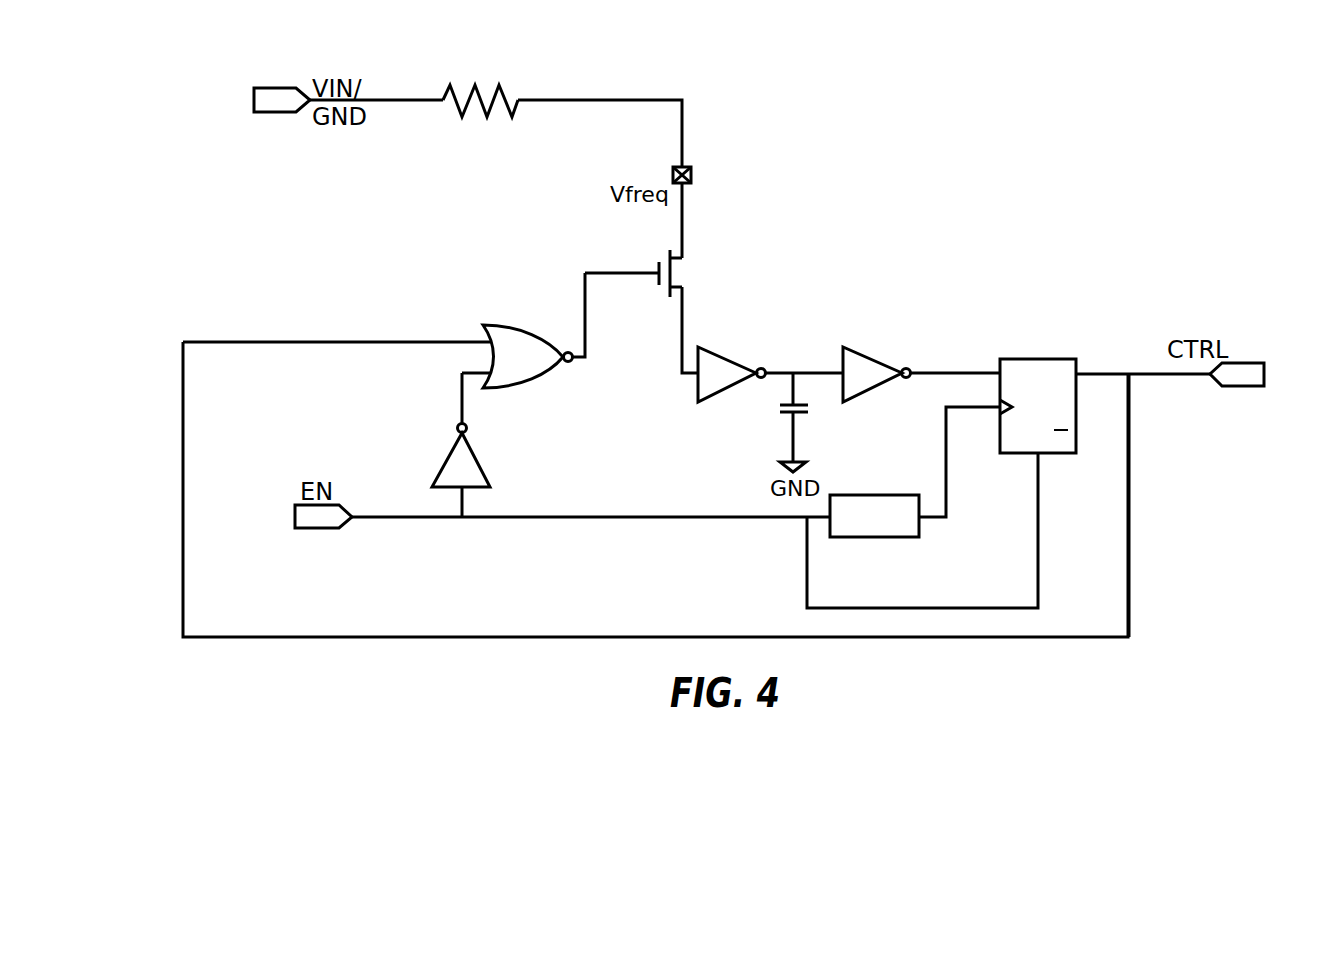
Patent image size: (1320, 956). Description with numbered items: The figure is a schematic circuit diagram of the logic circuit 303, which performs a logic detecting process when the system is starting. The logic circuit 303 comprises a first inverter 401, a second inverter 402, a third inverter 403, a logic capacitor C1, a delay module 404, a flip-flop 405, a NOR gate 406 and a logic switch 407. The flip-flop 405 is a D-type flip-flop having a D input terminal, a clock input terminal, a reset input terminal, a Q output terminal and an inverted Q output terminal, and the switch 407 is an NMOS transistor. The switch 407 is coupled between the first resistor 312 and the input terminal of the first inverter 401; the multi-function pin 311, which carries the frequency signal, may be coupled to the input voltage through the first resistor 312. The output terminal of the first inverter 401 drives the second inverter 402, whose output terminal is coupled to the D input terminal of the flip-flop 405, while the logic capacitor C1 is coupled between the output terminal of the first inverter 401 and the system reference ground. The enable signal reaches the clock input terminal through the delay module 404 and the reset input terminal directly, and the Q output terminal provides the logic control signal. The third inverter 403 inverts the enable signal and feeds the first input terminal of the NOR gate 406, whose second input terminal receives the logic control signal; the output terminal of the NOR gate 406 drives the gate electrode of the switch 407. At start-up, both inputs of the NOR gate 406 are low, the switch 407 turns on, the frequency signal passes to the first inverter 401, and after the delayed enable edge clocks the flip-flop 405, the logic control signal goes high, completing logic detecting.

The logic circuit 303 is at (858, 88).
The multi-function pin 311 is at (692, 174).
The first resistor 312 is at (497, 88).
The first inverter 401 is at (735, 361).
The second inverter 402 is at (871, 353).
The third inverter 403 is at (478, 458).
The delay module 404 is at (897, 537).
The flip-flop 405 is at (1028, 361).
The NOR gate 406 is at (515, 340).
The logic switch 407 is at (676, 272).
The logic capacitor C1 is at (797, 414).